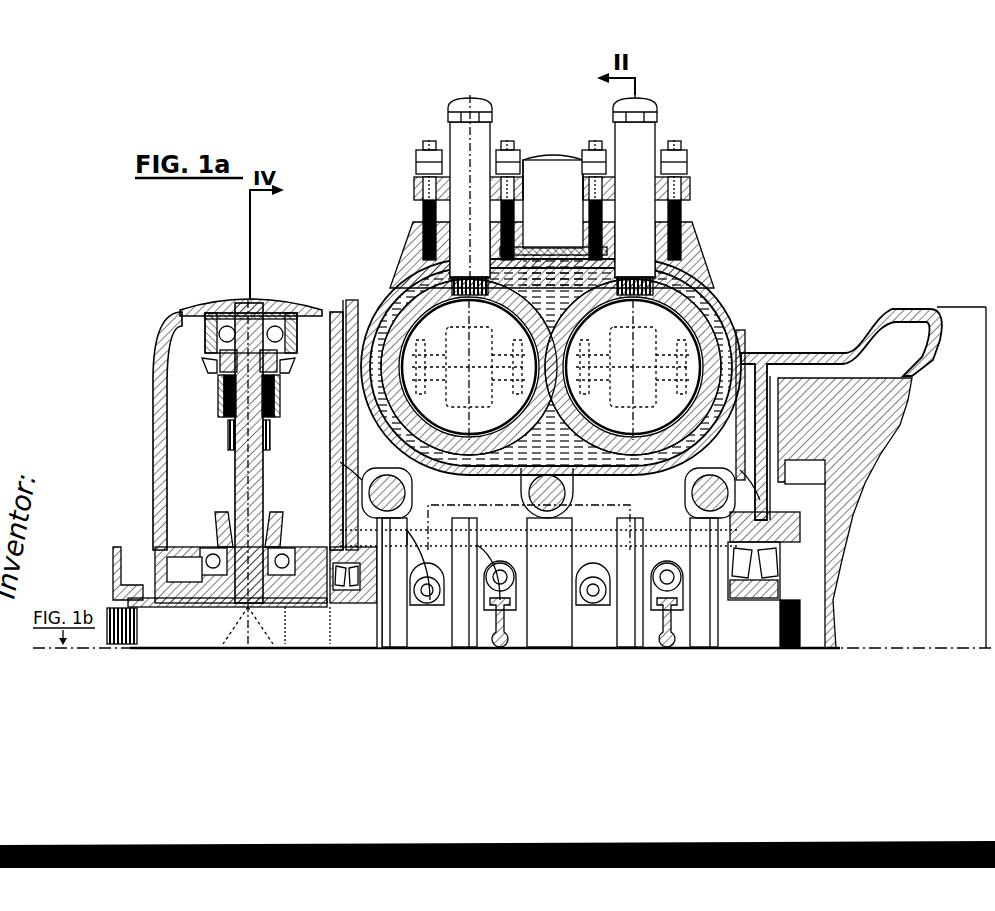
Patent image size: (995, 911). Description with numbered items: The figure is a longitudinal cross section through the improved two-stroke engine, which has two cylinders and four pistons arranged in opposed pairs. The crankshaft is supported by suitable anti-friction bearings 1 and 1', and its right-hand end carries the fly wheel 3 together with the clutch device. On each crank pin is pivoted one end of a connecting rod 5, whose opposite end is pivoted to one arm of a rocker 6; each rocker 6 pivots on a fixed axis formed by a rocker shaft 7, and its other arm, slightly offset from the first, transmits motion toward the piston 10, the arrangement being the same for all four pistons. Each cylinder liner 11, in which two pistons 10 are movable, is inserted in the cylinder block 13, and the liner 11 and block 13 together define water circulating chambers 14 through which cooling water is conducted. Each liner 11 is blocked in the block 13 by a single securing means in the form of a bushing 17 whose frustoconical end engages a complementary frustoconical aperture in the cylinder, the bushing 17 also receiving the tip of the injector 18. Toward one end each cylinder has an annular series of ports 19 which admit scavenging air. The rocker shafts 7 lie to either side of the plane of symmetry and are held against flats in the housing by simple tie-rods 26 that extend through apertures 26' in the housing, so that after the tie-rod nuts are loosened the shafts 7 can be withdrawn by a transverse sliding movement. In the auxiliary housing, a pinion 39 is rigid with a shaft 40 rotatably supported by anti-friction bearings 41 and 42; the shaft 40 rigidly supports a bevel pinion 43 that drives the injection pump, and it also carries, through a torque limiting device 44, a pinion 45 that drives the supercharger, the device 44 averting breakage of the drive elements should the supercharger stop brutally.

The anti-friction bearing 1 is at (472, 557).
The anti-friction bearing 1' is at (775, 480).
The fly wheel 3 is at (880, 400).
The connecting rod 5 is at (664, 566).
The rocker 6 is at (437, 578).
The rocker shaft 7 is at (768, 440).
The piston 10 is at (381, 306).
The cylinder liner 11 is at (412, 282).
The cylinder block 13 is at (700, 276).
The water circulating chamber 14 is at (346, 300).
The bushing 17 is at (420, 230).
The injector 18 is at (462, 137).
The port 19 is at (738, 343).
The tie-rod 26 is at (502, 424).
The aperture 26' is at (525, 490).
The pinion 39 is at (213, 585).
The shaft 40 is at (236, 434).
The anti-friction bearing 41 is at (172, 545).
The anti-friction bearing 42 is at (208, 305).
The bevel pinion 43 is at (218, 519).
The torque limiting device 44 is at (224, 393).
The pinion 45 is at (211, 357).